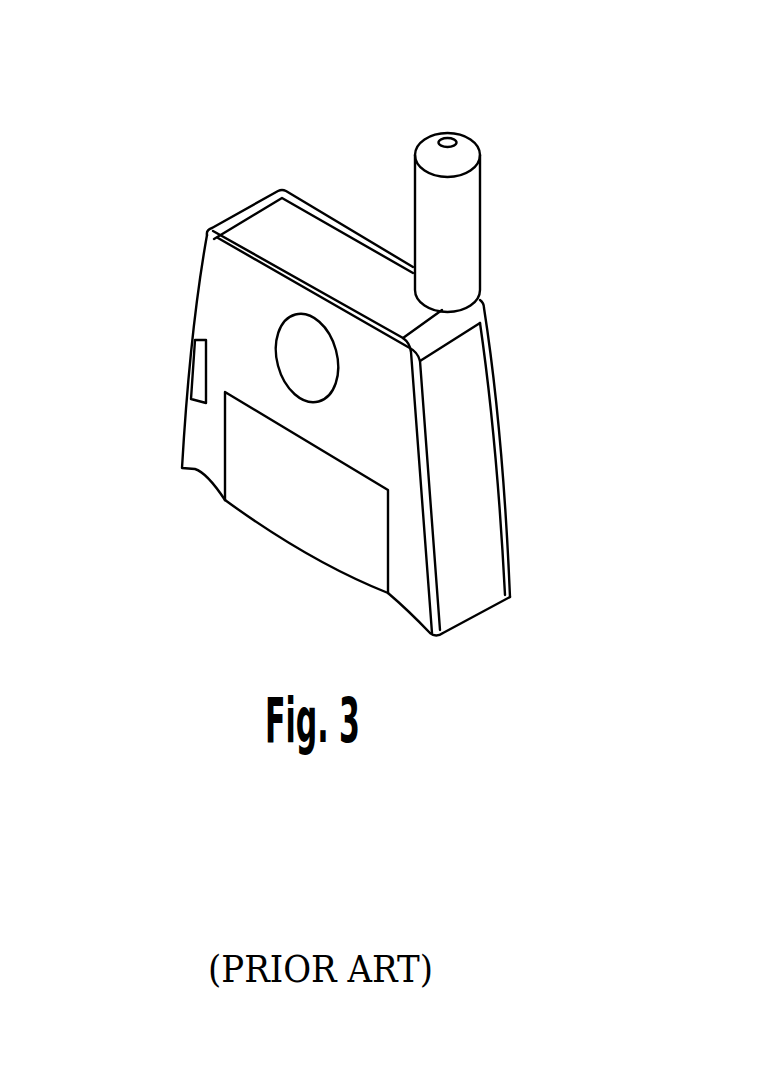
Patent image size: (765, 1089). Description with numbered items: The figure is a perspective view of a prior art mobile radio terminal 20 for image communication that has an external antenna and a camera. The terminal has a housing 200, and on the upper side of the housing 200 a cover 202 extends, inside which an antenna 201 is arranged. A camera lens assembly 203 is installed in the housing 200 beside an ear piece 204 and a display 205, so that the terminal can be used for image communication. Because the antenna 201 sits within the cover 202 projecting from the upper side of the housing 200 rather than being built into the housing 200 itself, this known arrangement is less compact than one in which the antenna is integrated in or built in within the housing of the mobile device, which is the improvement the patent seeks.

The mobile radio terminal 20 is at (357, 132).
The housing 200 is at (465, 368).
The antenna 201 is at (460, 240).
The cover 202 is at (480, 177).
The camera lens assembly 203 is at (188, 367).
The ear piece 204 is at (298, 353).
The display 205 is at (295, 507).